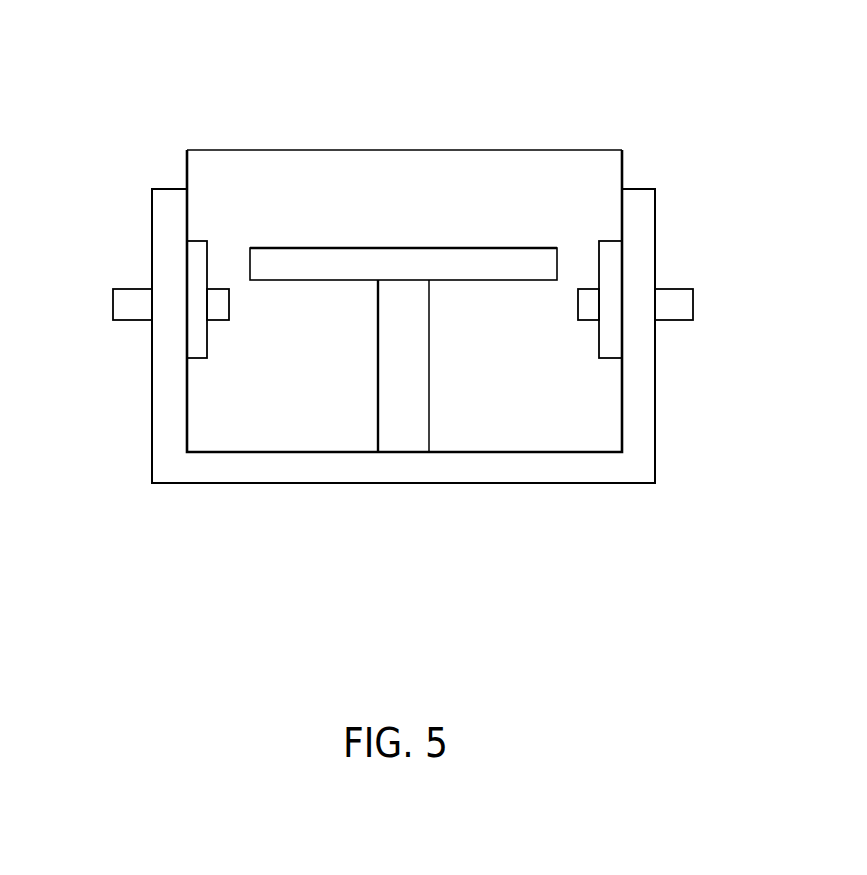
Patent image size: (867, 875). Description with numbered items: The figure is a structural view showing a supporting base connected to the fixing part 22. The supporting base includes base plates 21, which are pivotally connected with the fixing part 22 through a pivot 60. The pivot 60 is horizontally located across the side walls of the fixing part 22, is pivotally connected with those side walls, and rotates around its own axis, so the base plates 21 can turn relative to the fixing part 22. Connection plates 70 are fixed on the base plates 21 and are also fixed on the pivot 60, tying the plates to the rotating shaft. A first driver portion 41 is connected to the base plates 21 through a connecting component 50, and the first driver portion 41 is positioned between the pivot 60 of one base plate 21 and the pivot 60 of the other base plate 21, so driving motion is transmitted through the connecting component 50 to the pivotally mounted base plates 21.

The base plate 21 is at (502, 180).
The fixing part 22 is at (253, 463).
The first driver portion 41 is at (300, 262).
The connecting component 50 is at (410, 398).
The pivot 60 is at (132, 302).
The connection plate 70 is at (200, 262).